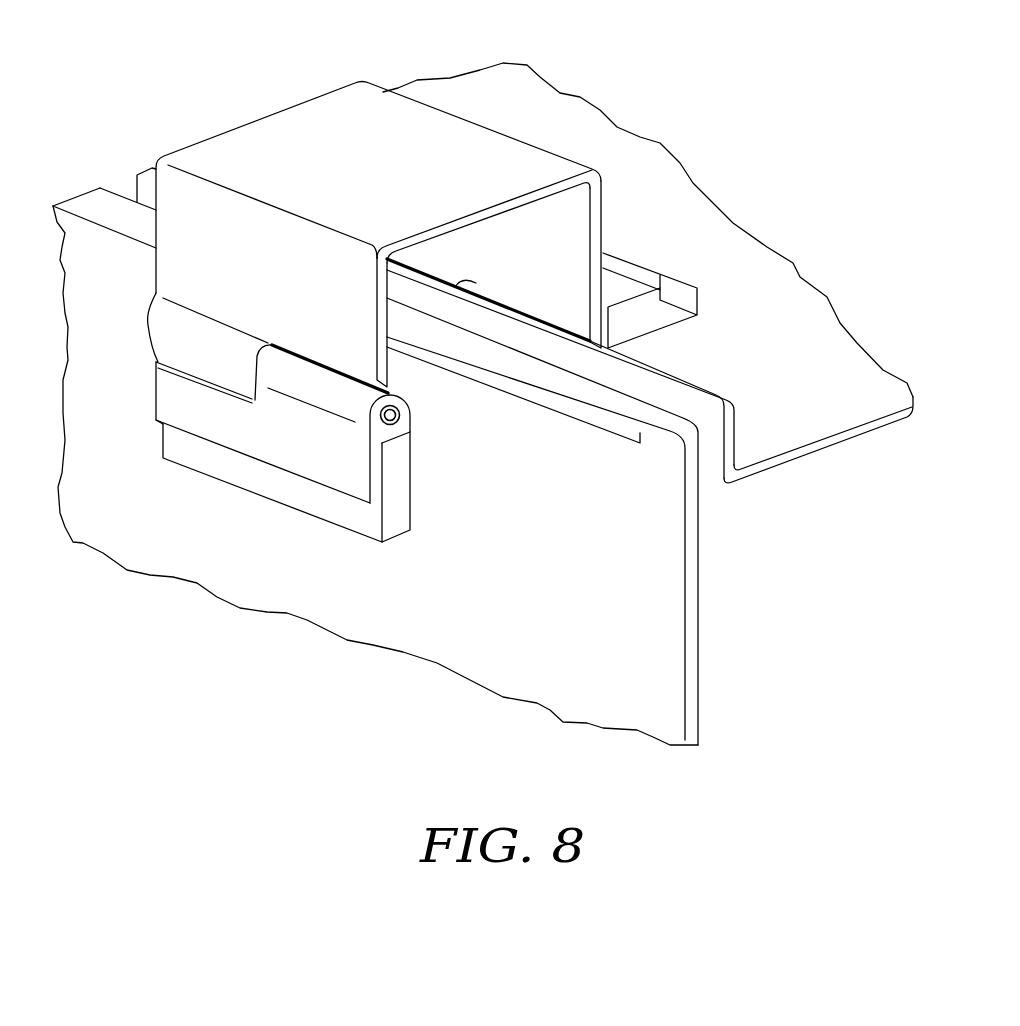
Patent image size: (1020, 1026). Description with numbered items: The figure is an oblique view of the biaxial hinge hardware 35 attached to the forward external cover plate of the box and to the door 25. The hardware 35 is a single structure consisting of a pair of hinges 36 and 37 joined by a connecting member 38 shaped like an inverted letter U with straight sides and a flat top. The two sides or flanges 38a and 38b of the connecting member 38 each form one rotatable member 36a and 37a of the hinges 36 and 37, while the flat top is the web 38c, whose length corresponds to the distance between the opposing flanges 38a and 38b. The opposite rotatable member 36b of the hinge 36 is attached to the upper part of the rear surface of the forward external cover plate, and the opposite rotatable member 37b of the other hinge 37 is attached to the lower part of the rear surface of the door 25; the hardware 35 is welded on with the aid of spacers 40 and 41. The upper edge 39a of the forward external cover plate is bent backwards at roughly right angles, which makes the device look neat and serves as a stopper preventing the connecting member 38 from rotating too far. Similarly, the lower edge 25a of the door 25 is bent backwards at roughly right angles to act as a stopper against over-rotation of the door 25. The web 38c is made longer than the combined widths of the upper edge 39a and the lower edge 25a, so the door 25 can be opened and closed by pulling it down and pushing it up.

The door 25 is at (648, 273).
The lower edge of the door 25a is at (720, 397).
The hardware 35 is at (483, 377).
The hinge 36 is at (253, 466).
The rotatable member of hinge 36a is at (293, 253).
The opposite rotatable member of hinge 36b is at (165, 397).
The hinge 37 is at (663, 213).
The rotatable member of hinge 37a is at (595, 264).
The opposite rotatable member of hinge 37b is at (615, 278).
The connecting member 38 is at (374, 233).
The flange of connecting member 38a is at (268, 282).
The flange of connecting member 38b is at (524, 319).
The web of connecting member 38c is at (500, 167).
The upper edge of the forward external cover plate 39a is at (650, 413).
The spacer 40 is at (342, 510).
The spacer 41 is at (677, 290).